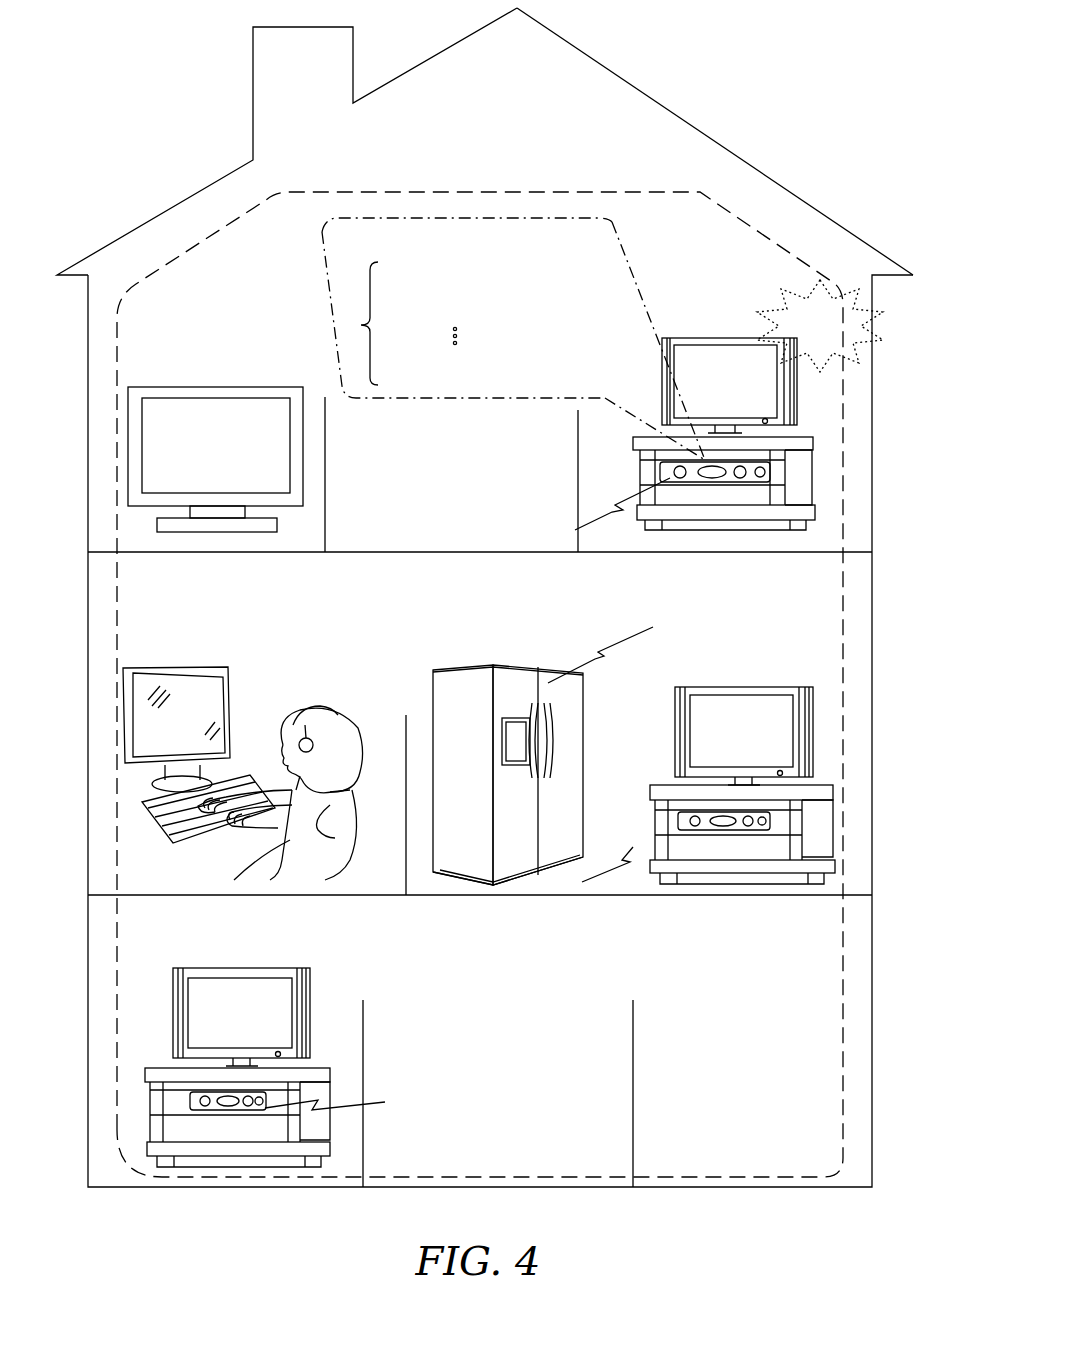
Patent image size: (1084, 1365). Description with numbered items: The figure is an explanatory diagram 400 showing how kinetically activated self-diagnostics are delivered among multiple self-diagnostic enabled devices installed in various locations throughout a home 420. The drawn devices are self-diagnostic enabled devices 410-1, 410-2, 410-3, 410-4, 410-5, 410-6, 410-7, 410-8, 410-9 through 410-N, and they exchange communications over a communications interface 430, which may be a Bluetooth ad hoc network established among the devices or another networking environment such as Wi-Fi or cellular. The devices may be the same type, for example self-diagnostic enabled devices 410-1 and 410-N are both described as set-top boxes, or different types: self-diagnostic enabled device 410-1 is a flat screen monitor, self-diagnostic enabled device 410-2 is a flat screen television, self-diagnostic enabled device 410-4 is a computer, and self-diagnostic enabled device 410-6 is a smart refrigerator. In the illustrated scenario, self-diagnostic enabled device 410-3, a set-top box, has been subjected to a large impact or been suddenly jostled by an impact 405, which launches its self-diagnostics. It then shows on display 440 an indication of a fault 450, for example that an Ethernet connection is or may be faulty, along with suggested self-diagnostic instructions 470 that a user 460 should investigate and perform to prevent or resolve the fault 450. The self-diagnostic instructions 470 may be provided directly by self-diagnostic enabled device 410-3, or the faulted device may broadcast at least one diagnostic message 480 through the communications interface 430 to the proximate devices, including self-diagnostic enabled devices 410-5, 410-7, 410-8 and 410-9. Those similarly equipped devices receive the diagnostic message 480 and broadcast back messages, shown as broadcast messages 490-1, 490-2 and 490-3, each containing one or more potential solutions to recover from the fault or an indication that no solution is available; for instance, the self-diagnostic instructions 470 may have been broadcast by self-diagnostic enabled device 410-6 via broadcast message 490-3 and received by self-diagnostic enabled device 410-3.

The explanatory diagram 400 is at (686, 80).
The impact 405 is at (820, 292).
The self-diagnostic enabled device 410-1 is at (212, 390).
The self-diagnostic enabled device 410-2 is at (712, 338).
The self-diagnostic enabled device 410-3 is at (775, 464).
The self-diagnostic enabled device 410-4 is at (172, 674).
The self-diagnostic enabled device 410-5 is at (308, 736).
The self-diagnostic enabled device 410-6 is at (470, 666).
The self-diagnostic enabled device 410-7 is at (724, 687).
The self-diagnostic enabled device 410-8 is at (695, 810).
The self-diagnostic enabled device 410-9 is at (236, 968).
The self-diagnostic enabled device 410-N is at (192, 1118).
The home 420 is at (741, 166).
The communications interface 430 is at (594, 192).
The display 440 is at (700, 462).
The fault 450 is at (322, 240).
The user 460 is at (340, 732).
The self-diagnostic instructions 470 is at (361, 325).
The diagnostic message 480 is at (608, 510).
The broadcast message 490-1 is at (320, 1108).
The broadcast message 490-2 is at (612, 884).
The broadcast message 490-3 is at (612, 650).